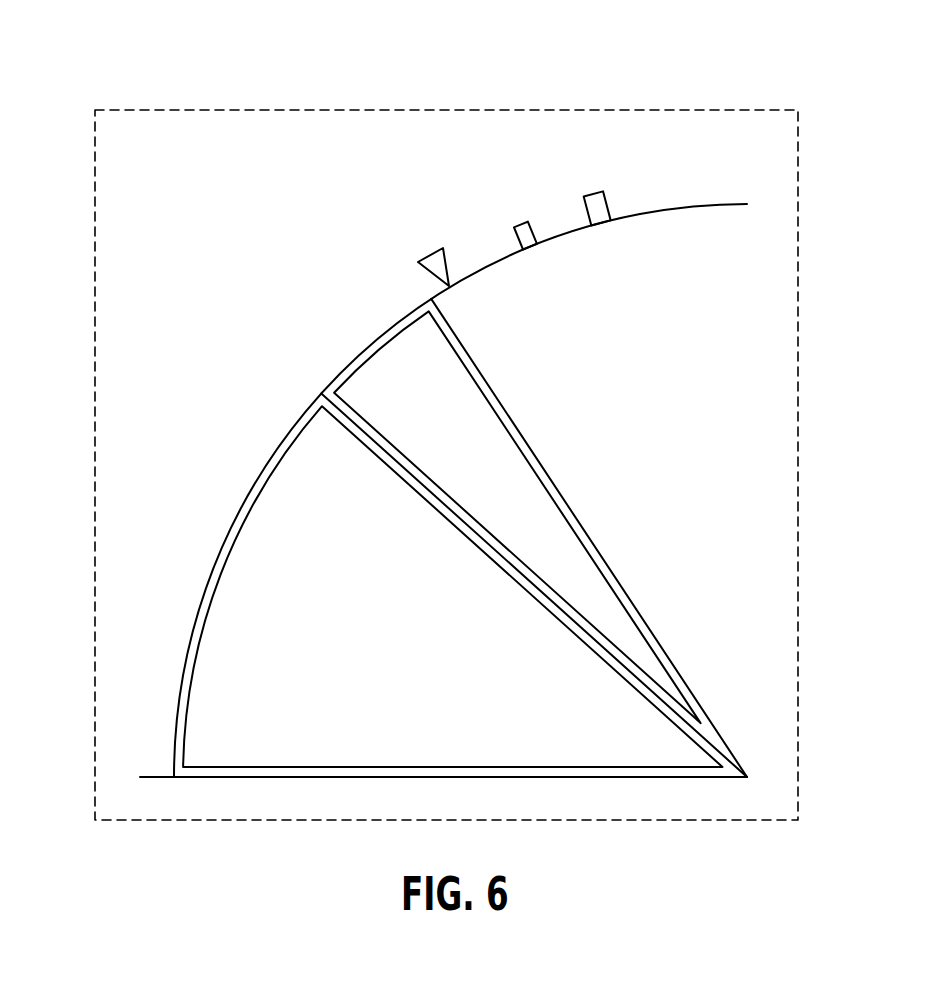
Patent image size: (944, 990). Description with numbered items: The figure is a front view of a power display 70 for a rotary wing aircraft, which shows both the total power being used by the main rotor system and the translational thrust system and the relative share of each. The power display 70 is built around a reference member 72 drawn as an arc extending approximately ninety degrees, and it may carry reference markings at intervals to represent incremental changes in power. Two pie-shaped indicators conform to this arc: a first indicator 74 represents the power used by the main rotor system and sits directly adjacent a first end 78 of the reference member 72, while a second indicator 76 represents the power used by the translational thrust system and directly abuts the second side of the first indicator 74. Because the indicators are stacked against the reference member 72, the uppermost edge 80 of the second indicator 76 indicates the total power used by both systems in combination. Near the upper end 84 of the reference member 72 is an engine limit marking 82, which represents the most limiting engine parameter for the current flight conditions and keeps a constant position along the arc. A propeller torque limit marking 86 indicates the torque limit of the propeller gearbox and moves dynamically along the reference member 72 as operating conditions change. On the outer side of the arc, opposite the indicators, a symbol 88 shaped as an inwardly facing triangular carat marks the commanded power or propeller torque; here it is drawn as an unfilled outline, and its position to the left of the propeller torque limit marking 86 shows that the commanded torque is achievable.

The power display 70 is at (440, 421).
The reference member 72 is at (407, 476).
The first indicator 74 is at (452, 586).
The second indicator 76 is at (517, 517).
The first end 78 is at (397, 741).
The uppermost edge 80 is at (589, 538).
The engine limit marking 82 is at (657, 146).
The upper end 84 is at (746, 251).
The propeller torque limit marking 86 is at (569, 154).
The symbol 88 is at (346, 239).